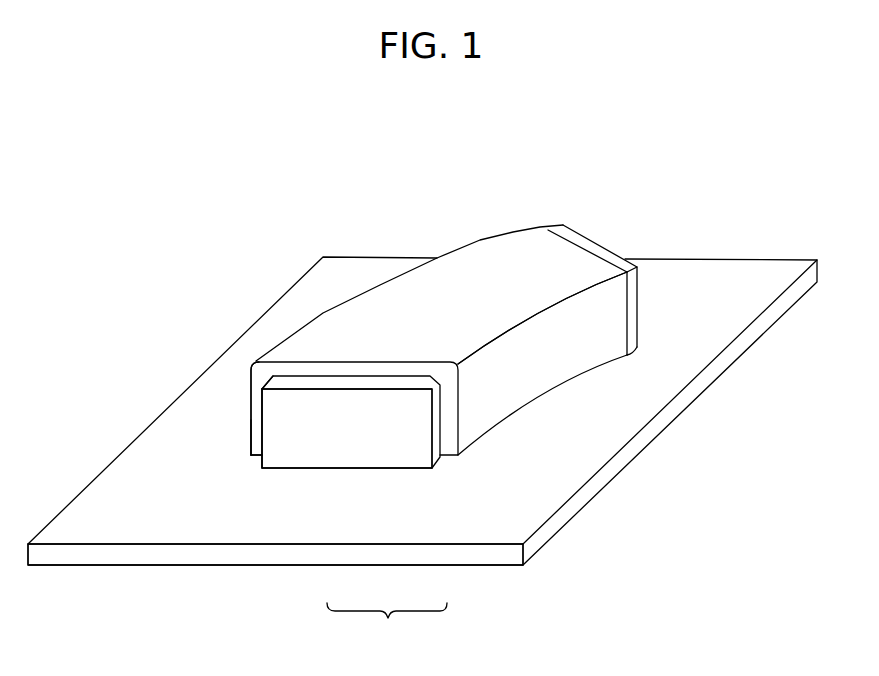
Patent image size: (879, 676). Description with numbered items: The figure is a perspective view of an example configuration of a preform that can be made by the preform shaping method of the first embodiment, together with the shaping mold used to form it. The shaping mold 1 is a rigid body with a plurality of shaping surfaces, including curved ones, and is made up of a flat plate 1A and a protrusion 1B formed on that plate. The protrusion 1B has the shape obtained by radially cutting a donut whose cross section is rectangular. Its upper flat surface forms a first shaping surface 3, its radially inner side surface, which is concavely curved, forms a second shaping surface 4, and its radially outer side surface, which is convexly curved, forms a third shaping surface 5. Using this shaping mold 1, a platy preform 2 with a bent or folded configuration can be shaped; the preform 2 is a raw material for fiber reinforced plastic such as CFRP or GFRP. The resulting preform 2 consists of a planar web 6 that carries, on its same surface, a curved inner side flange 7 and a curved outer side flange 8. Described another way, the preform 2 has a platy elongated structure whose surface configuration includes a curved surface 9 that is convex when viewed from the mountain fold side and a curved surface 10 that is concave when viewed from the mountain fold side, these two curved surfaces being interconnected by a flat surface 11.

The shaping mold 1 is at (387, 628).
The flat plate 1A is at (327, 523).
The protrusion 1B is at (353, 452).
The preform 2 is at (284, 333).
The first shaping surface 3 is at (353, 383).
The second shaping surface 4 is at (437, 422).
The third shaping surface 5 is at (255, 436).
The web 6 is at (503, 273).
The inner side flange 7 is at (557, 348).
The outer side flange 8 is at (255, 418).
The curved surface 9 is at (250, 391).
The curved surface 10 is at (523, 388).
The flat surface 11 is at (447, 273).